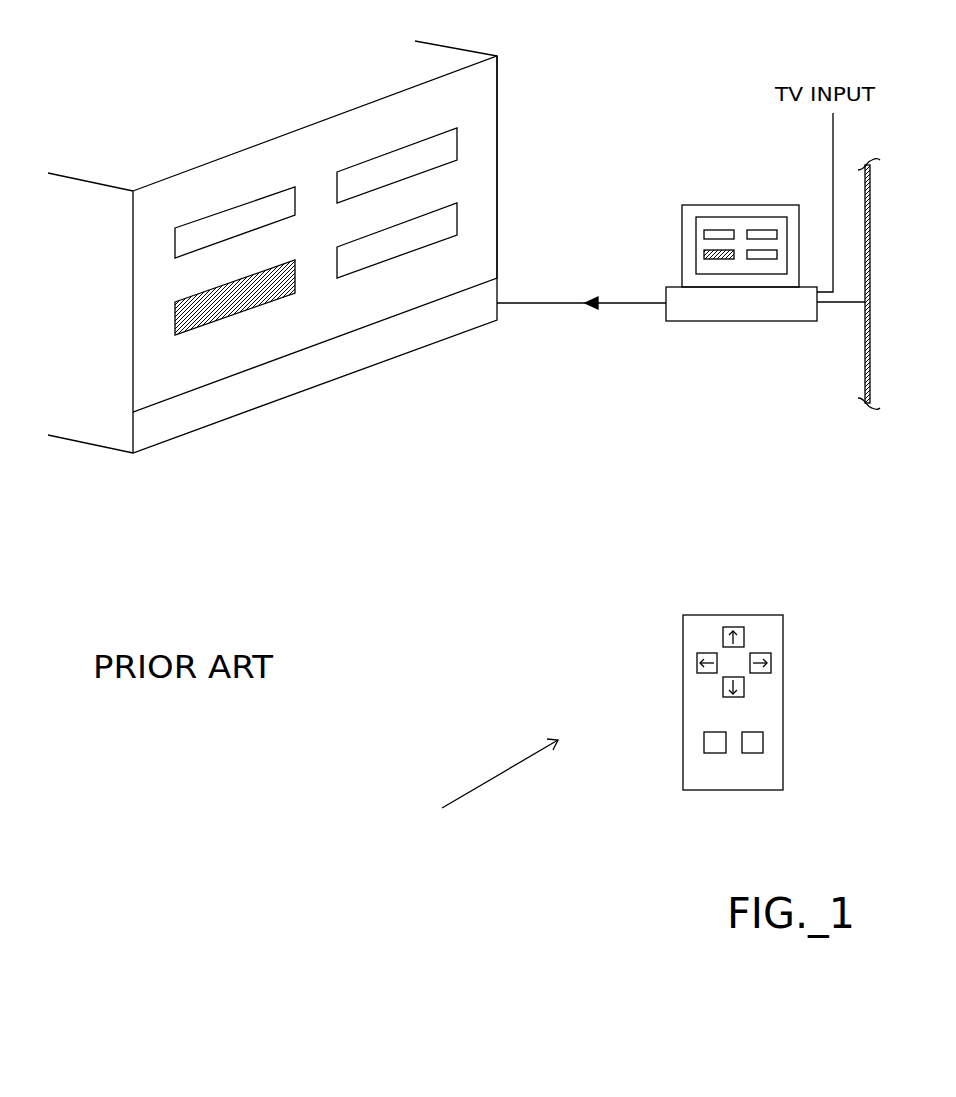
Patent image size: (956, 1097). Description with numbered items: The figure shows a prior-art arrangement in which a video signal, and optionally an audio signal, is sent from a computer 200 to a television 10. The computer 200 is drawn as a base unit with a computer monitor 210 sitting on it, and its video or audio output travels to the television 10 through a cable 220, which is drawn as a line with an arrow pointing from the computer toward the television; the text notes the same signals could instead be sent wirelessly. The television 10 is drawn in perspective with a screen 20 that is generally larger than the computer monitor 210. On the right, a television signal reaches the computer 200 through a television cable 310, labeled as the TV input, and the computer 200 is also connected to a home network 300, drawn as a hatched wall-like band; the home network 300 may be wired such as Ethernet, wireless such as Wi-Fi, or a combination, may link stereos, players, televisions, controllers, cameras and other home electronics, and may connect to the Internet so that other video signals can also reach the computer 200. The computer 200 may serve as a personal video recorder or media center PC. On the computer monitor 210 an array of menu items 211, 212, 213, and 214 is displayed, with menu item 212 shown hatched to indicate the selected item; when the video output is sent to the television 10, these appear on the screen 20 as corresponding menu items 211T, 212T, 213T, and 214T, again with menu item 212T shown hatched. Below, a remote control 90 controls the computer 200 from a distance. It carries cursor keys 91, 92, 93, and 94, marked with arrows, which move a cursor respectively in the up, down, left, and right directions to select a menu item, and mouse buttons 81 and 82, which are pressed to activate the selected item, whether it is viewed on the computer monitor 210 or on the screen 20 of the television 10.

The television 10 is at (468, 54).
The screen 20 is at (148, 207).
The menu item 211T is at (200, 219).
The menu item 212T is at (235, 314).
The menu item 213T is at (360, 163).
The menu item 214T is at (410, 252).
The computer 200 is at (666, 297).
The computer monitor 210 is at (682, 206).
The menu item 211 is at (713, 229).
The menu item 212 is at (704, 253).
The menu item 213 is at (777, 250).
The menu item 214 is at (755, 229).
The cable 220 is at (548, 303).
The television cable 310 is at (835, 220).
The home network 300 is at (865, 360).
The remote control 90 is at (593, 721).
The cursor key 91 is at (727, 627).
The cursor key 92 is at (743, 687).
The cursor key 93 is at (697, 665).
The cursor key 94 is at (763, 652).
The mouse button 81 is at (713, 740).
The mouse button 82 is at (750, 740).